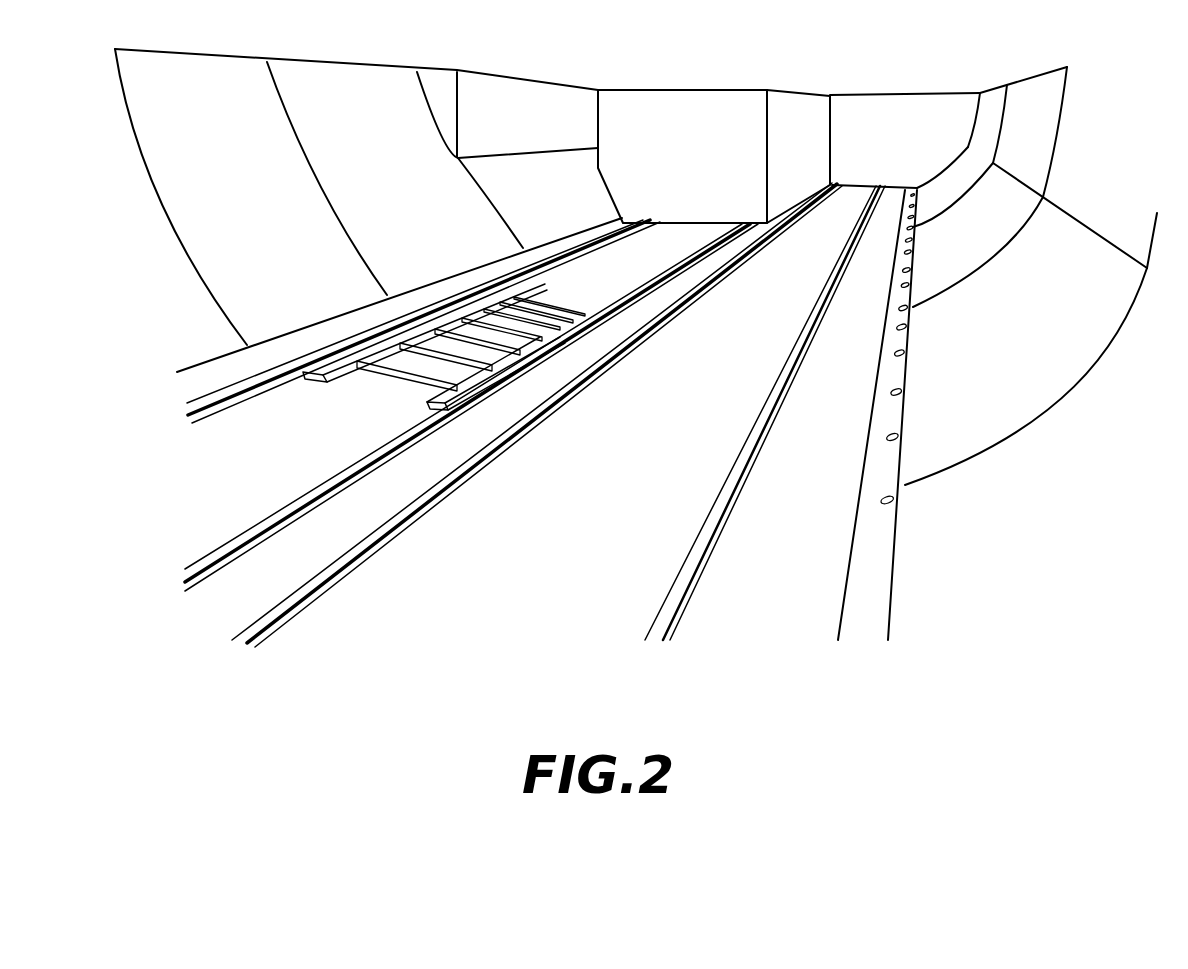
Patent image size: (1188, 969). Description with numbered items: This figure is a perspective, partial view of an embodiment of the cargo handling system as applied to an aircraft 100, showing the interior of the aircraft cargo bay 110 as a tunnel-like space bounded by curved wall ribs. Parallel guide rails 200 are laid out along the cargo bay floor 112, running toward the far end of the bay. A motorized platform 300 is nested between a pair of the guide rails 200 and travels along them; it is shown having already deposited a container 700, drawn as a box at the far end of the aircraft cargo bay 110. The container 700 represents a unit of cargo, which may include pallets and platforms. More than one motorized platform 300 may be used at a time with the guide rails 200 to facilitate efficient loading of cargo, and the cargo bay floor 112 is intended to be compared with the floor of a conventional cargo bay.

The aircraft 100 is at (1067, 385).
The aircraft cargo bay 110 is at (881, 144).
The cargo bay floor 112 is at (506, 597).
The guide rails 200 is at (340, 473).
The motorized platform 300 is at (588, 290).
The container 700 is at (698, 162).